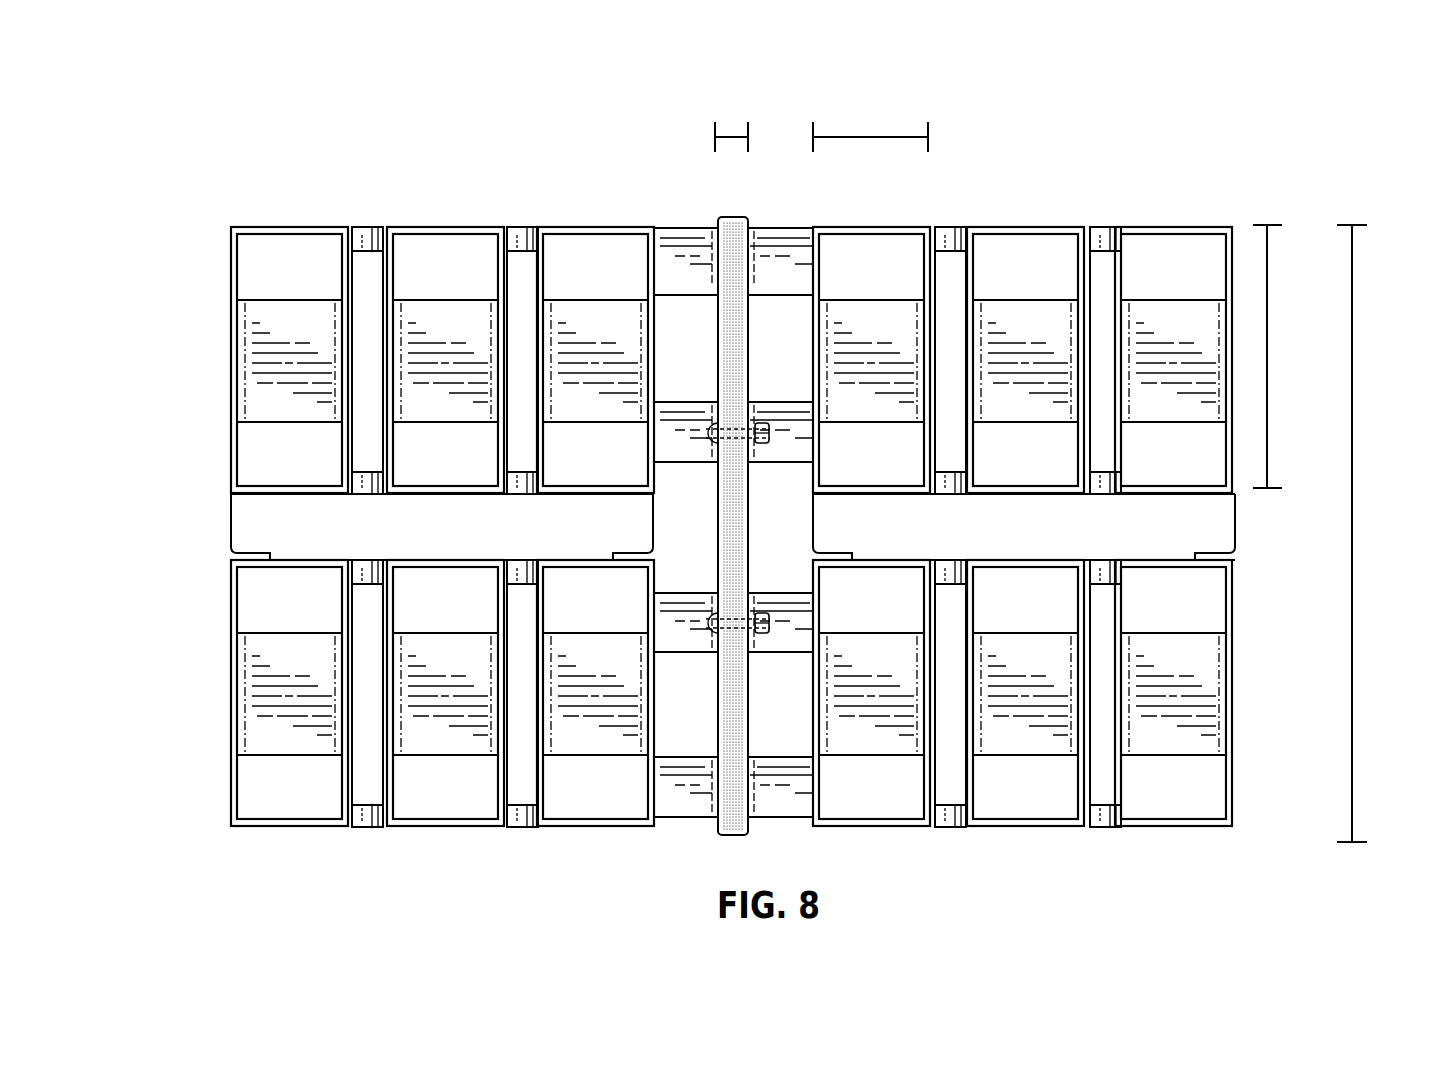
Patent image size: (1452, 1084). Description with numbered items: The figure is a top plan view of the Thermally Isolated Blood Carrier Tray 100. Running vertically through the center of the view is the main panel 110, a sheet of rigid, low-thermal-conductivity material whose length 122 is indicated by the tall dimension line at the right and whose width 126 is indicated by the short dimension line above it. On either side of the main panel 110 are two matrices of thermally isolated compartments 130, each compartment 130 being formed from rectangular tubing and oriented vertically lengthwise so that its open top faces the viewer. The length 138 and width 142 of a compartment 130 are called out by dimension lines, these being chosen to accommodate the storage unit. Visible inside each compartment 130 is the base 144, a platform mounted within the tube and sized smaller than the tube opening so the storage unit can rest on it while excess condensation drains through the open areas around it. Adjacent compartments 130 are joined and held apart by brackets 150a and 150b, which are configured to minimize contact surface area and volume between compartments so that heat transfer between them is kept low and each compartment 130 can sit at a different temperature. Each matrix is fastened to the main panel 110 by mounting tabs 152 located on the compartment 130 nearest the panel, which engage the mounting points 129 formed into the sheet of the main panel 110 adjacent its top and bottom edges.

The Thermally Isolated Blood Carrier Tray 100 is at (288, 133).
The main panel 110 is at (730, 217).
The length 122 is at (1352, 465).
The width 126 is at (733, 136).
The mounting points 129 is at (762, 412).
The thermally isolated compartment 130 is at (853, 228).
The length 138 is at (1267, 367).
The width 142 is at (878, 136).
The base 144 is at (866, 310).
The bracket 150a is at (230, 535).
The bracket 150b is at (1098, 228).
The mounting tabs 152 is at (766, 242).